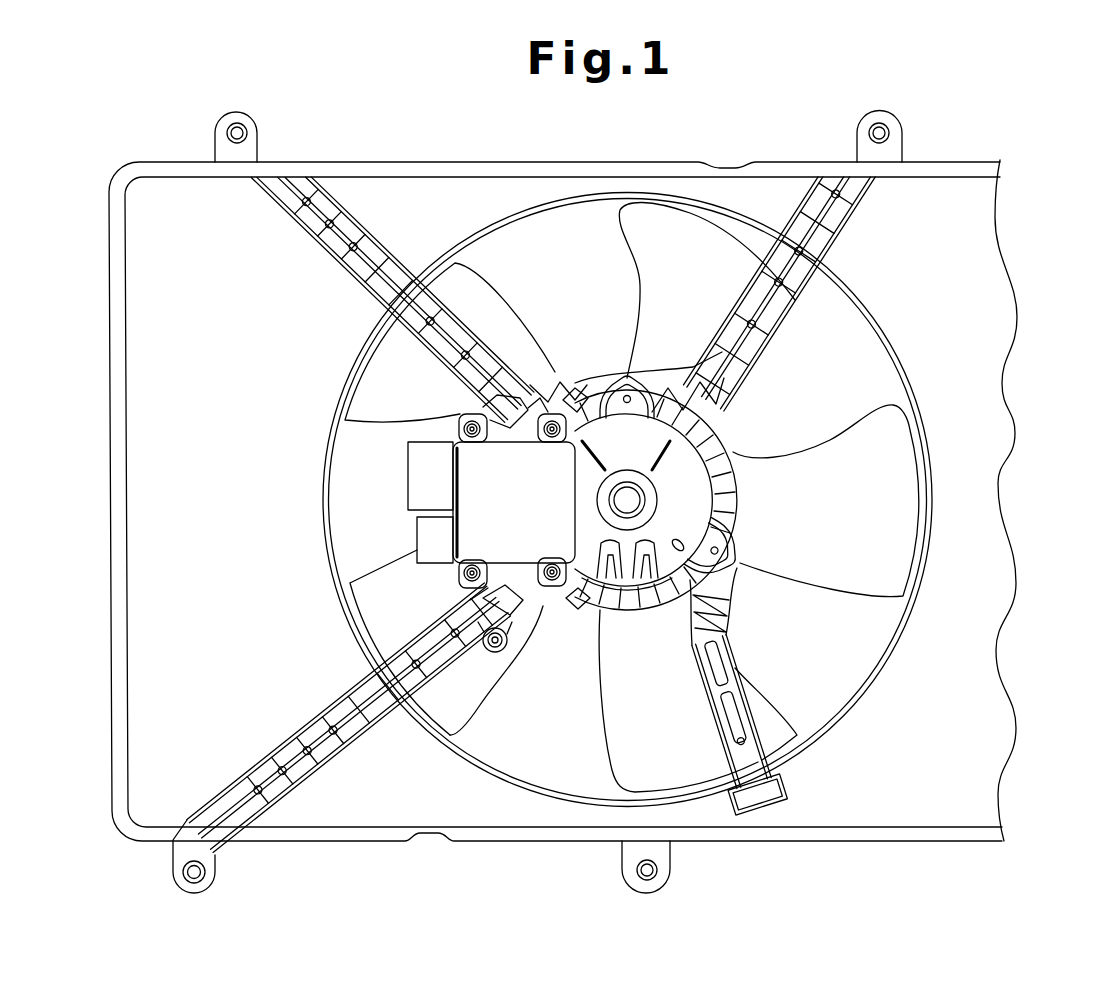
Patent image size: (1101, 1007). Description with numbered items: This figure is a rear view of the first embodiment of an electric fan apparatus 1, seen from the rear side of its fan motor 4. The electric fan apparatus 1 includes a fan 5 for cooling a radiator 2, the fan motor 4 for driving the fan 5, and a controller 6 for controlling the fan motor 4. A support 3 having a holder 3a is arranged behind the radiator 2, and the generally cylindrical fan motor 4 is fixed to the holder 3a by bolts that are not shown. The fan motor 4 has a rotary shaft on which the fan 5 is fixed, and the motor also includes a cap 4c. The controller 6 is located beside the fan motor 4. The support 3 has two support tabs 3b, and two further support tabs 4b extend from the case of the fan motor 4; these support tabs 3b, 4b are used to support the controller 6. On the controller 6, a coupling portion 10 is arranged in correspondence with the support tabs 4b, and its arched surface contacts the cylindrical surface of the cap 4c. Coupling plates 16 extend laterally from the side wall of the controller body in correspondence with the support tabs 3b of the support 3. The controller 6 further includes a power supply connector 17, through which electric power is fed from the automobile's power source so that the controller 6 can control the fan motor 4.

The electric fan apparatus 1 is at (1060, 195).
The radiator 2 is at (390, 170).
The support 3 is at (746, 342).
The holder 3a is at (732, 568).
The support tabs 3b is at (477, 411).
The fan motor 4 is at (686, 457).
The support tabs 4b is at (573, 403).
The cap 4c is at (697, 491).
The fan 5 is at (640, 244).
The controller 6 is at (490, 493).
The coupling portion 10 is at (535, 405).
The coupling plates 16 is at (467, 418).
The power supply connector 17 is at (423, 478).